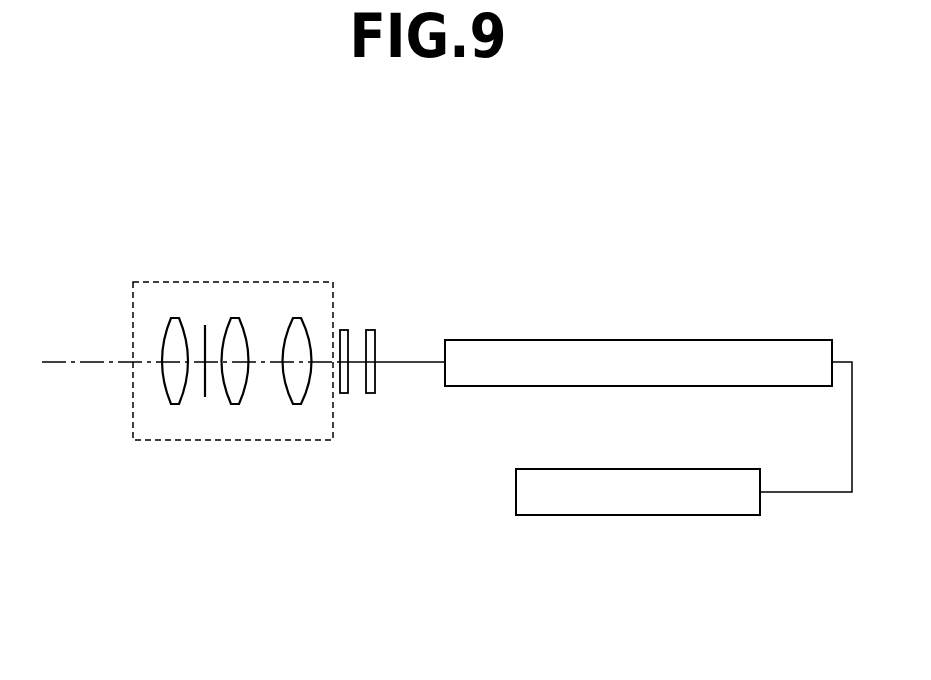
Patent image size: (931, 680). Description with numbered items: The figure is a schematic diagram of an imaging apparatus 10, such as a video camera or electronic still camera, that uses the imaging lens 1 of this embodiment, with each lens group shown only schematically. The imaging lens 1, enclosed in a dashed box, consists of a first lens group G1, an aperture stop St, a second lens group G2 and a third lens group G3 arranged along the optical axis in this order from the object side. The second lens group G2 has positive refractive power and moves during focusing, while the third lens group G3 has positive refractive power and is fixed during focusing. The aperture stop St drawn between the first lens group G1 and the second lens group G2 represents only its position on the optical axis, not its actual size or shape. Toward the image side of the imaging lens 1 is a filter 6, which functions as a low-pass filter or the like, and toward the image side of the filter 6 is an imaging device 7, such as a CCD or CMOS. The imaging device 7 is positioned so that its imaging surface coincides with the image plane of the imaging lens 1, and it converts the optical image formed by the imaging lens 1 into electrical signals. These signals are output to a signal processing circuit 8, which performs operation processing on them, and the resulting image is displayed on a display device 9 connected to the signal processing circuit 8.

The imaging apparatus 10 is at (288, 174).
The imaging lens 1 is at (203, 282).
The first lens group G1 is at (173, 408).
The aperture stop St is at (205, 397).
The second lens group G2 is at (237, 408).
The third lens group G3 is at (298, 408).
The filter 6 is at (345, 330).
The imaging device 7 is at (371, 330).
The signal processing circuit 8 is at (780, 340).
The display device 9 is at (722, 469).